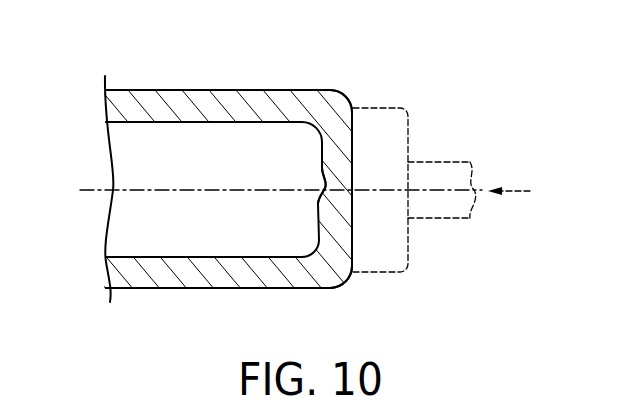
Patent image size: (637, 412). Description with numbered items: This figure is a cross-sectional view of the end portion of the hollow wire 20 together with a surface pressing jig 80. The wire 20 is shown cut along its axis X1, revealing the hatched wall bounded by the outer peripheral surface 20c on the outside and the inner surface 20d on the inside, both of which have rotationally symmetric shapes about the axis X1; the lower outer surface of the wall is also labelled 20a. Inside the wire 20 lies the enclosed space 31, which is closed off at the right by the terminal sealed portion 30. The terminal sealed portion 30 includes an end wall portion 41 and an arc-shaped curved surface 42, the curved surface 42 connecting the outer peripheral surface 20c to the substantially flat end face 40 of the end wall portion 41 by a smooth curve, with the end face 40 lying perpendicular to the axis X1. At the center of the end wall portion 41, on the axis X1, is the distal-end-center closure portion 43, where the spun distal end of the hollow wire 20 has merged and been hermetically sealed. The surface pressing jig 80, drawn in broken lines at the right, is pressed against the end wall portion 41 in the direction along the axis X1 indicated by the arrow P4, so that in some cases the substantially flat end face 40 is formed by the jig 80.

The wire 20 is at (148, 100).
The bottom outer surface of body 20a is at (280, 283).
The outer peripheral surface 20c is at (255, 90).
The inner surface 20d is at (195, 123).
The terminal sealed portion 30 is at (368, 122).
The enclosed space 31 is at (123, 227).
The end face 40 is at (353, 240).
The end wall portion 41 is at (353, 141).
The arc-shaped curved surface 42 is at (350, 108).
The distal-end-center closure portion 43 is at (318, 173).
The surface pressing jig 80 is at (412, 122).
The axis X1 is at (92, 188).
The arrow P4 is at (525, 192).